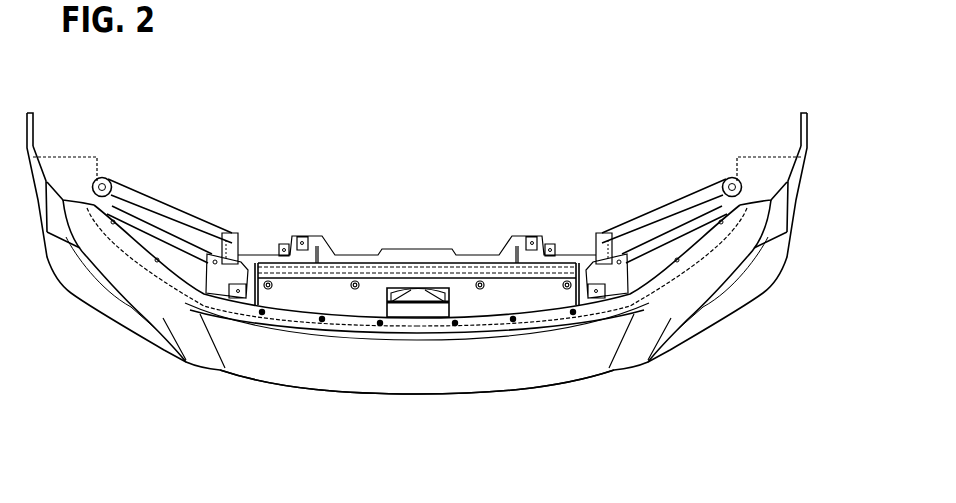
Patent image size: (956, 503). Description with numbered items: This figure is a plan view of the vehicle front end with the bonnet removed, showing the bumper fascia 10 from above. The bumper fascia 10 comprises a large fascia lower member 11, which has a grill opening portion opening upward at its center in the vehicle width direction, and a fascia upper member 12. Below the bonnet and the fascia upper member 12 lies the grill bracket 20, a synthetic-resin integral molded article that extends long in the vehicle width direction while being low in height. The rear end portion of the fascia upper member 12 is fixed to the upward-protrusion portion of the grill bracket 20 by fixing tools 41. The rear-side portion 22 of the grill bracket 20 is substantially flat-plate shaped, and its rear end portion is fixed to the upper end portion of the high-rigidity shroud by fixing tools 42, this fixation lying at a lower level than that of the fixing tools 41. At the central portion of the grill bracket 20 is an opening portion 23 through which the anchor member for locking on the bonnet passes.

The bumper fascia 10 is at (435, 253).
The fascia lower member 11 is at (769, 283).
The fascia upper member 12 is at (386, 372).
The grill bracket 20 is at (417, 232).
The rear-side portion 22 is at (333, 303).
The opening portion 23 is at (443, 306).
The fixing tools 41 is at (514, 324).
The fixing tools 42 is at (481, 281).